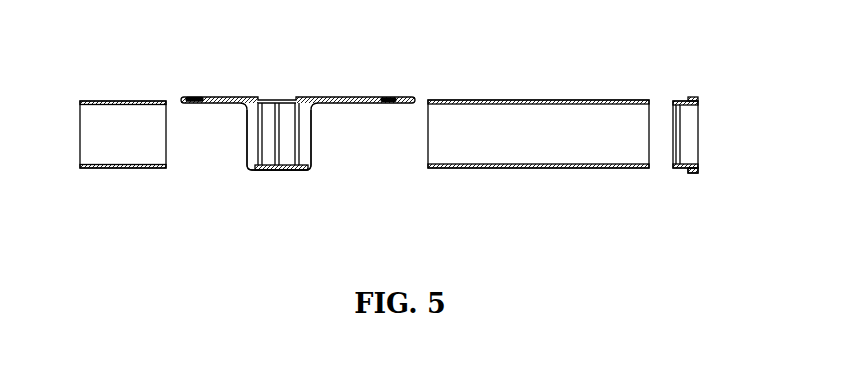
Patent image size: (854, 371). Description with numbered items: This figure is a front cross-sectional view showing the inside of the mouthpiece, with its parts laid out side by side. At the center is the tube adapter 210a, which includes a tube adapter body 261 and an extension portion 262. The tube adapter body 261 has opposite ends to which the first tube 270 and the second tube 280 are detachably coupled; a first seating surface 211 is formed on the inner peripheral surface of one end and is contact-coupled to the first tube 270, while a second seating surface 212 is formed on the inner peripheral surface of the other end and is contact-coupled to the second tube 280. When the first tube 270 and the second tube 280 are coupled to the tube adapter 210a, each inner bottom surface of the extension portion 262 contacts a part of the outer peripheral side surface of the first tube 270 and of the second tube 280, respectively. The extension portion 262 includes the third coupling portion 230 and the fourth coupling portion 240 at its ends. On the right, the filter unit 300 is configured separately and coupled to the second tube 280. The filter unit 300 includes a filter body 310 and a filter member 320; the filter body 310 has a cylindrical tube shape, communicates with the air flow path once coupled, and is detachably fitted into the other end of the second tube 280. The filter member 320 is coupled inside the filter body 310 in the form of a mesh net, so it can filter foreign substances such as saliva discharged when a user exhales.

The first tube 270 is at (126, 91).
The third coupling portion 230 is at (199, 97).
The tube adapter 210a is at (345, 86).
The fourth coupling portion 240 is at (390, 98).
The second tube 280 is at (579, 98).
The filter unit 300 is at (685, 91).
The extension portion 262 is at (225, 101).
The first seating surface 211 is at (255, 167).
The second seating surface 212 is at (309, 152).
The tube adapter body 261 is at (288, 170).
The filter member 320 is at (679, 147).
The filter body 310 is at (690, 174).